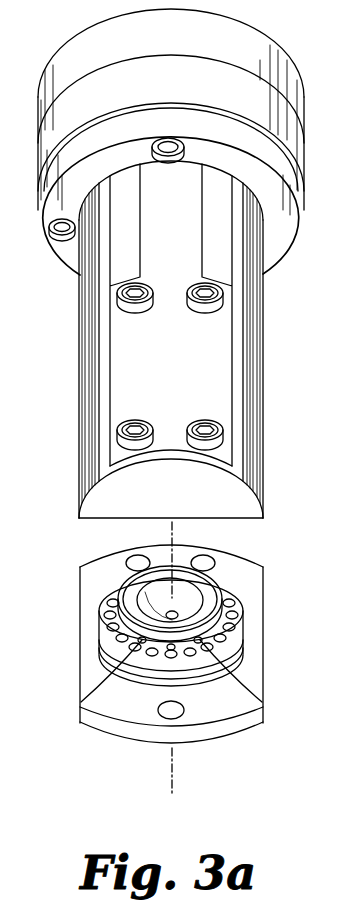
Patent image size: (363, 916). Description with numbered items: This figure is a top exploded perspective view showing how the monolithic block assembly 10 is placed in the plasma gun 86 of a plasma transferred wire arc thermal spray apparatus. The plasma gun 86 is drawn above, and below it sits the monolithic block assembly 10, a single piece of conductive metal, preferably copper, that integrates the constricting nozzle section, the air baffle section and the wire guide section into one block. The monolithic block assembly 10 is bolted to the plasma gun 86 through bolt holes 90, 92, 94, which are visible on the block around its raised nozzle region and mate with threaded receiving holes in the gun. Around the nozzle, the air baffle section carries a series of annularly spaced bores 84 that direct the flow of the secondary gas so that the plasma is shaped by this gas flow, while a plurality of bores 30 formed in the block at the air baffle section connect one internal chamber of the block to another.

The monolithic block assembly 10 is at (170, 660).
The bores 30 is at (230, 603).
The annularly spaced bores 84 is at (80, 699).
The plasma gun 86 is at (79, 361).
The bolt hole 90 is at (203, 562).
The bolt hole 92 is at (138, 562).
The bolt hole 94 is at (171, 716).